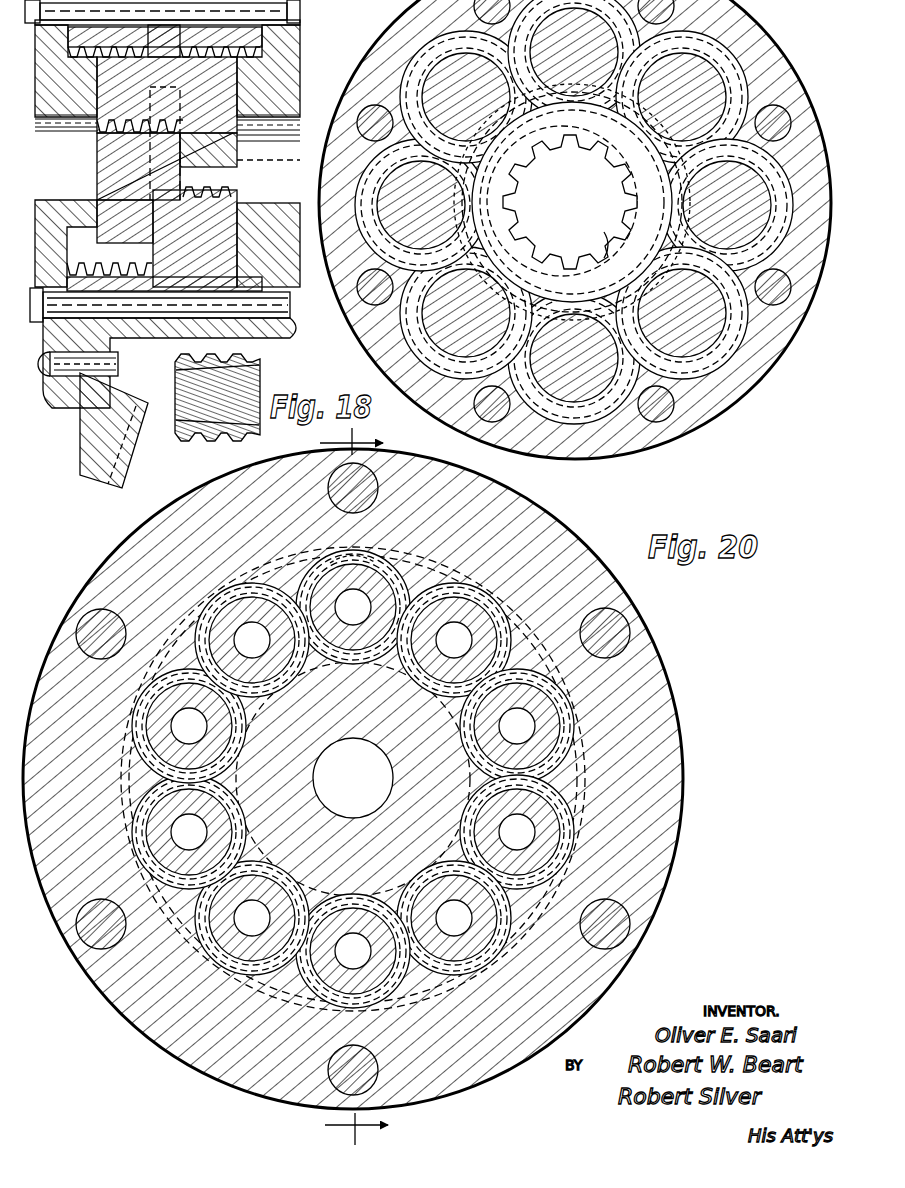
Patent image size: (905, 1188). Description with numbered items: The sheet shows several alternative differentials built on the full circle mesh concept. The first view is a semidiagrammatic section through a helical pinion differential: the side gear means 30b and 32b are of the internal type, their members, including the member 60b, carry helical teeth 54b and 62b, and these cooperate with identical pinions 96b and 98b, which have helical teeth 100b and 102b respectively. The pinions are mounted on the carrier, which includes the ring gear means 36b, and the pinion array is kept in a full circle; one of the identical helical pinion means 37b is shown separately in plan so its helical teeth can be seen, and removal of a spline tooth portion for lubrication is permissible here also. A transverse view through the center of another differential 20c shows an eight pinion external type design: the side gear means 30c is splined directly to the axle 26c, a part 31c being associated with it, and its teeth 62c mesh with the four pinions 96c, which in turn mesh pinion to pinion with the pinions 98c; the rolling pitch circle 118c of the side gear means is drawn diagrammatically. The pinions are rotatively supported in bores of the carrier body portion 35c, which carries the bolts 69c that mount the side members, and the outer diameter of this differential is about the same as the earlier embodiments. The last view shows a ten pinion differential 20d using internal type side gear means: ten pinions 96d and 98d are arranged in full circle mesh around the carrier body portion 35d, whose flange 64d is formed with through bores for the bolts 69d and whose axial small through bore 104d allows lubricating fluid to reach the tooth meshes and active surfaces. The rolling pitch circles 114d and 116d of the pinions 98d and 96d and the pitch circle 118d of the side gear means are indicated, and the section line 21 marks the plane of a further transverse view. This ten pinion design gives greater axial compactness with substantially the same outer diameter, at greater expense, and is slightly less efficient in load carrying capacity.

In FIG. 17, the helical teeth 54b is at (162, 11).
In FIG. 17, the side gear means 32b is at (62, 105).
In FIG. 17, the side gear means 30b is at (268, 106).
In FIG. 17, the pinion 98b is at (118, 98).
In FIG. 17, the helical teeth 102b is at (112, 203).
In FIG. 17, the helical teeth 100b is at (214, 168).
In FIG. 18, the helical teeth 100b is at (200, 432).
In FIG. 17, the pinion 96b is at (262, 148).
In FIG. 18, the pinion 96b is at (178, 393).
In FIG. 17, the helical teeth 62b is at (228, 262).
In FIG. 17, the side gear member 60b is at (270, 296).
In FIG. 17, the ring gear means 36b is at (100, 440).
In FIG. 18, the pinion means 37b is at (270, 368).
In FIG. 19, the differential 20c is at (743, 430).
In FIG. 19, the carrier body portion 35c is at (577, 440).
In FIG. 19, the bolts 69c is at (664, 415).
In FIG. 19, the pinion 96c is at (592, 398).
In FIG. 19, the pinion 98c is at (710, 92).
In FIG. 19, the axle 26c is at (572, 202).
In FIG. 19, the pitch circle 118c is at (562, 201).
In FIG. 19, the side gear means 30c is at (503, 194).
In FIG. 19, the sun gear hub 31c is at (577, 186).
In FIG. 19, the teeth 62c is at (492, 241).
In FIG. 20, the differential 20d is at (683, 876).
In FIG. 20, the carrier body portion 35d is at (653, 727).
In FIG. 20, the bolts 69d is at (340, 1080).
In FIG. 20, the pitch circle 116d is at (172, 560).
In FIG. 20, the pitch circle 118d is at (577, 745).
In FIG. 20, the flange 64d is at (655, 660).
In FIG. 20, the pinion 96d is at (342, 565).
In FIG. 20, the pinion 98d is at (320, 580).
In FIG. 20, the axial through bore 104d is at (353, 778).
In FIG. 20, the pitch circle 114d is at (200, 540).
In FIG. 20, the section line 21 is at (354, 786).